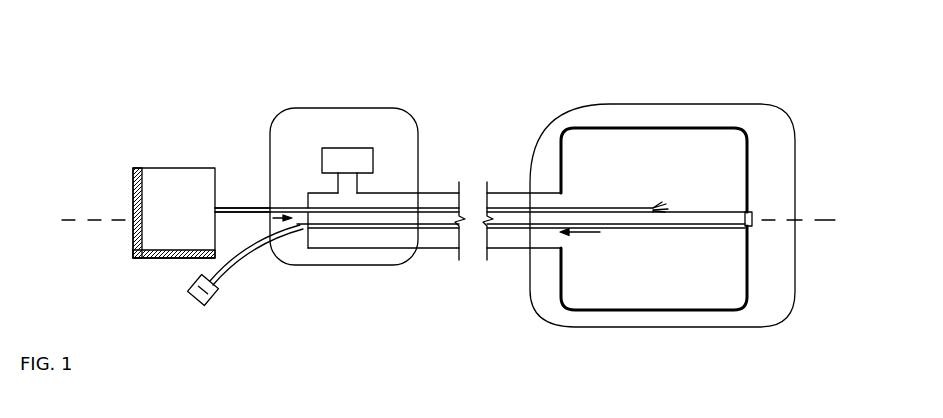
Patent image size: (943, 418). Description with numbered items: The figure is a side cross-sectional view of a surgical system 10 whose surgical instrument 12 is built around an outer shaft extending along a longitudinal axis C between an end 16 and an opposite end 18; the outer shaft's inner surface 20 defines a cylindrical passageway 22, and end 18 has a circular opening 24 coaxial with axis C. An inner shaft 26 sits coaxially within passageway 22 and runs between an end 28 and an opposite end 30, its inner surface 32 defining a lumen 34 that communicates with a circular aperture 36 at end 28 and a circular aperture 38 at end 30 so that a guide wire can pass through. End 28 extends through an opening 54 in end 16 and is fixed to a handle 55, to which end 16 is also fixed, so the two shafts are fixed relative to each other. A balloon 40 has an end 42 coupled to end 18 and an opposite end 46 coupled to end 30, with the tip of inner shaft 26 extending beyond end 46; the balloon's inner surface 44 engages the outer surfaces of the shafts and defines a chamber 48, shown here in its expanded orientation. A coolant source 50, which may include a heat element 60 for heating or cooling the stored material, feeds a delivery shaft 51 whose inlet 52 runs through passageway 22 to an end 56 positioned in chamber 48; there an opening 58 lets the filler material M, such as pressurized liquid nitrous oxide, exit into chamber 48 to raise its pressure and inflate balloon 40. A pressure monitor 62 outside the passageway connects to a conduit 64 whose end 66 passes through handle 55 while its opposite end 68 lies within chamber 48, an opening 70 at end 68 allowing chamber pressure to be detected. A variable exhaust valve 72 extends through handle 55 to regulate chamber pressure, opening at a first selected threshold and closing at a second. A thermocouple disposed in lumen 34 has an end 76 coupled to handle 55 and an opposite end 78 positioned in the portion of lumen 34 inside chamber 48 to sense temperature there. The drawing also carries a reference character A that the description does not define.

The surgical system 10 is at (151, 52).
The surgical instrument 12 is at (488, 283).
The end 16 is at (300, 197).
The opposite end 18 is at (524, 240).
The inner surface 20 is at (500, 246).
The passageway 22 is at (520, 200).
The circular opening 24 is at (555, 241).
The inner shaft 26 is at (385, 206).
The end 28 is at (270, 212).
The opposite end 30 is at (753, 230).
The inner surface 32 is at (724, 230).
The lumen 34 is at (612, 218).
The circular aperture 36 is at (272, 212).
The circular aperture 38 is at (758, 223).
The balloon 40 is at (716, 194).
The end 42 is at (558, 191).
The inner surface 44 is at (675, 310).
The end 46 is at (749, 212).
The chamber 48 is at (732, 170).
The coolant source 50 is at (153, 168).
The delivery shaft 51 is at (258, 213).
The inlet 52 is at (222, 208).
The opening 54 is at (265, 208).
The handle 55 is at (367, 265).
The end 56 is at (573, 207).
The opening 58 is at (658, 205).
The heat element 60 is at (137, 258).
The pressure monitor 62 is at (198, 296).
The conduit 64 is at (240, 268).
The end 66 is at (443, 229).
The opposite end 68 is at (561, 165).
The opening 70 is at (632, 232).
The variable exhaust valve 72 is at (348, 158).
The end 76 is at (338, 229).
The opposite end 78 is at (668, 238).
The axis point A is at (594, 207).
The longitudinal axis C is at (447, 220).
The inflation material M is at (673, 196).